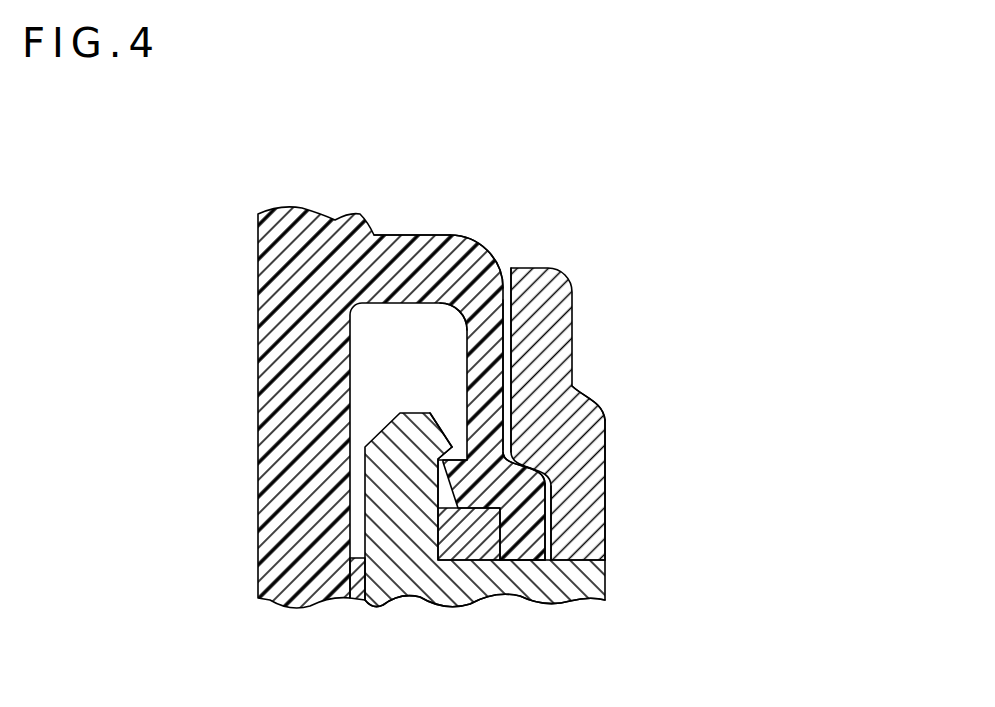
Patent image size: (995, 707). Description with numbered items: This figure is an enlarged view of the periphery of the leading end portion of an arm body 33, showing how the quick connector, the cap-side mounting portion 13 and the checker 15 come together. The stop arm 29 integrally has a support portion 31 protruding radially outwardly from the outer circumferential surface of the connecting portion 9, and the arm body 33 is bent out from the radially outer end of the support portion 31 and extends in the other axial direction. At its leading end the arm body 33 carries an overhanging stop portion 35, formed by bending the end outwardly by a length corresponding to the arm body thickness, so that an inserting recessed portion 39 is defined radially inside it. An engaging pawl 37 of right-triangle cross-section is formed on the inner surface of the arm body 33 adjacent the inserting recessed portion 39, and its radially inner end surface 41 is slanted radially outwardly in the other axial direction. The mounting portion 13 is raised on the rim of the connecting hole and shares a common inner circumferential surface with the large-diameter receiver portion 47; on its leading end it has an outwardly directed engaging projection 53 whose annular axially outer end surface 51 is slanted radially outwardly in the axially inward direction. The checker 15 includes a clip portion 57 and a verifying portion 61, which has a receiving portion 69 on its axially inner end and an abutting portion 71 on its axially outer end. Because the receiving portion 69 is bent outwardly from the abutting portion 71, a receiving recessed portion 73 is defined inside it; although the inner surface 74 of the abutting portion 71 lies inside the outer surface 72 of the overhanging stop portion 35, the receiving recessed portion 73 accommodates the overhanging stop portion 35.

The connecting portion 9 is at (297, 487).
The mounting portion 13 is at (395, 515).
The checker 15 is at (577, 268).
The stop arm 29 is at (490, 241).
The support portion 31 is at (402, 262).
The arm body 33 is at (483, 314).
The overhanging stop portion 35 is at (540, 551).
The engaging pawl 37 is at (540, 462).
The inserting recessed portion 39 is at (560, 594).
The radially inner end surface 41 is at (537, 480).
The receiver portion 47 is at (340, 592).
The axially outer end surface 51 is at (443, 413).
The outwardly directed engaging projection 53 is at (450, 448).
The clip portion 57 is at (462, 540).
The verifying portion 61 is at (610, 390).
The receiving portion 69 is at (520, 547).
The abutting portion 71 is at (537, 360).
The outer surface 72 is at (548, 507).
The receiving recessed portion 73 is at (605, 553).
The inner surface 74 is at (493, 312).